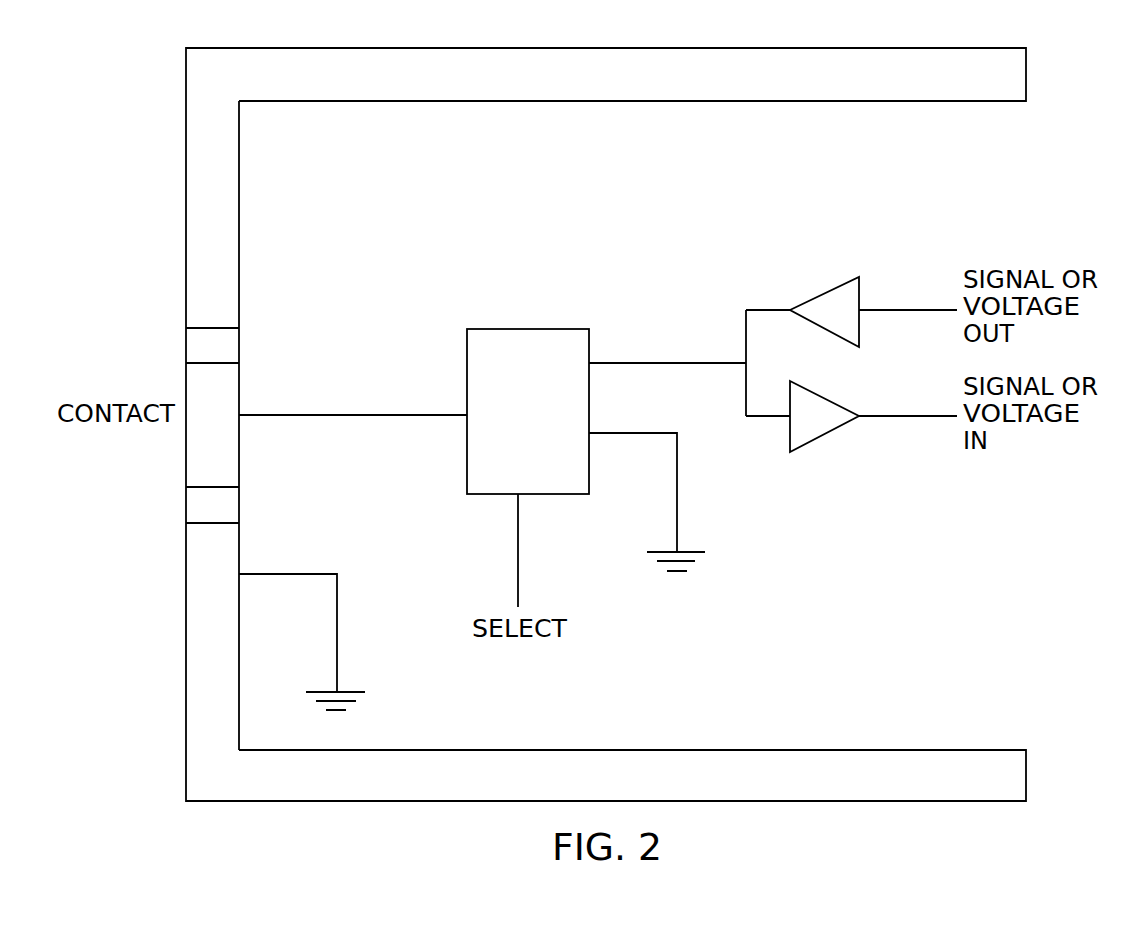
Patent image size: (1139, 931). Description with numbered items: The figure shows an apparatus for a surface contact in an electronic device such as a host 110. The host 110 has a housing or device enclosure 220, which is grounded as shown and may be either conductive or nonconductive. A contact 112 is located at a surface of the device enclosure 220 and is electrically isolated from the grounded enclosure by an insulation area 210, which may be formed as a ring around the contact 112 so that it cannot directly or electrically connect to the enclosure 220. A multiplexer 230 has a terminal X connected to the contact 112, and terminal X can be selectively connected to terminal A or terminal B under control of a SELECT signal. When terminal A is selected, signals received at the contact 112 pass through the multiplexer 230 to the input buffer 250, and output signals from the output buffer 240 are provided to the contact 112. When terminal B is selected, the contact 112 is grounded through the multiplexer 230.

The host 110 is at (1038, 132).
The contact 112 is at (186, 447).
The insulation area 210 is at (202, 346).
The device enclosure 220 is at (202, 192).
The multiplexer 230 is at (528, 329).
The output buffer 240 is at (828, 290).
The input buffer 250 is at (825, 435).